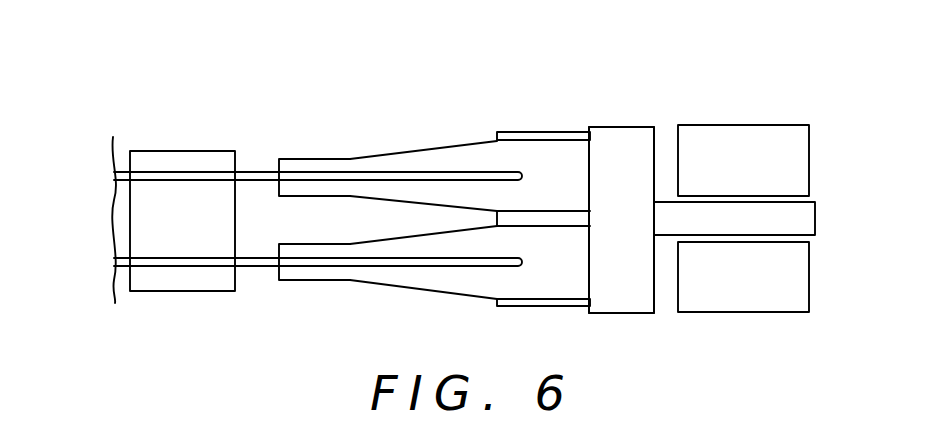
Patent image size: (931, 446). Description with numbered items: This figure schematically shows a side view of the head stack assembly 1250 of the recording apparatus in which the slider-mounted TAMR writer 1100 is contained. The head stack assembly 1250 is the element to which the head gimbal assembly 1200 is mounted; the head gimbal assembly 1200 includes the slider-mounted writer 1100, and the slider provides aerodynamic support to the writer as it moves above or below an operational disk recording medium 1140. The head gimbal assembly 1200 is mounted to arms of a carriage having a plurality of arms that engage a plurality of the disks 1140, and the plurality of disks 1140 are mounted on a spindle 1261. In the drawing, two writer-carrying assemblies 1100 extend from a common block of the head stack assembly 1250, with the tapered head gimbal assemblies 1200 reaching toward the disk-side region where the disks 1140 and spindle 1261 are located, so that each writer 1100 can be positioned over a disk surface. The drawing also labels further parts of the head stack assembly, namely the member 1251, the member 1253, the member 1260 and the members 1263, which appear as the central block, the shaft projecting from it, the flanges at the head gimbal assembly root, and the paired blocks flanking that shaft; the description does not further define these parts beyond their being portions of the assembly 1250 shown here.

The slider-mounted TAMR writer 1100 is at (279, 160).
The disk recording medium 1140 is at (247, 172).
The head gimbal assembly 1200 is at (370, 162).
The head stack assembly 1250 is at (628, 107).
The connector block 1251 is at (624, 298).
The terminal pin 1253 is at (803, 217).
The flange 1260 is at (507, 131).
The spindle 1261 is at (172, 165).
The clamp block 1263 is at (745, 135).